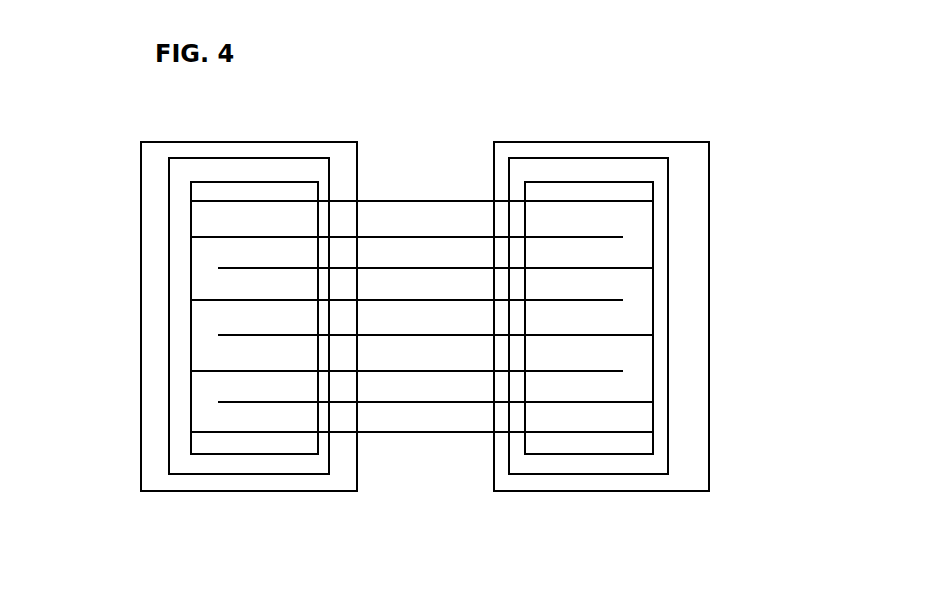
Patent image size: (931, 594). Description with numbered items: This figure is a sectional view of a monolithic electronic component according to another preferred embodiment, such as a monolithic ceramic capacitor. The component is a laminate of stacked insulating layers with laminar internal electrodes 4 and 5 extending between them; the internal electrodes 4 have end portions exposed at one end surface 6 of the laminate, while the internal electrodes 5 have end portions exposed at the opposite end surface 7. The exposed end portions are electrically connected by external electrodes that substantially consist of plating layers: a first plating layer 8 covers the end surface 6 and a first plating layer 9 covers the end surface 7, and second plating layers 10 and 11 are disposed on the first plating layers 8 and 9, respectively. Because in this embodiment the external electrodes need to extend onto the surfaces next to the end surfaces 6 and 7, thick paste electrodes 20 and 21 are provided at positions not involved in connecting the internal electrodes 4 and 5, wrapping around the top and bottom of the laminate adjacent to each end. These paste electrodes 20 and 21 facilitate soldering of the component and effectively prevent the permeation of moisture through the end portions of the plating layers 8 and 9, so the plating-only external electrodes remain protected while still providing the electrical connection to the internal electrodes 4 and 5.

The internal electrodes 4 is at (265, 372).
The internal electrodes 5 is at (566, 404).
The end surface 6 is at (192, 255).
The end surface 7 is at (657, 237).
The first plating layer 8 is at (180, 442).
The first plating layer 9 is at (660, 443).
The second plating layer 10 is at (160, 363).
The second plating layer 11 is at (693, 355).
The paste electrode 20 is at (247, 192).
The paste electrode 21 is at (565, 193).